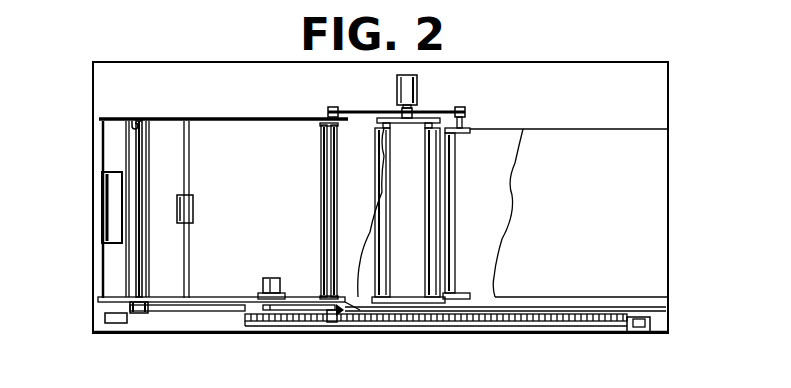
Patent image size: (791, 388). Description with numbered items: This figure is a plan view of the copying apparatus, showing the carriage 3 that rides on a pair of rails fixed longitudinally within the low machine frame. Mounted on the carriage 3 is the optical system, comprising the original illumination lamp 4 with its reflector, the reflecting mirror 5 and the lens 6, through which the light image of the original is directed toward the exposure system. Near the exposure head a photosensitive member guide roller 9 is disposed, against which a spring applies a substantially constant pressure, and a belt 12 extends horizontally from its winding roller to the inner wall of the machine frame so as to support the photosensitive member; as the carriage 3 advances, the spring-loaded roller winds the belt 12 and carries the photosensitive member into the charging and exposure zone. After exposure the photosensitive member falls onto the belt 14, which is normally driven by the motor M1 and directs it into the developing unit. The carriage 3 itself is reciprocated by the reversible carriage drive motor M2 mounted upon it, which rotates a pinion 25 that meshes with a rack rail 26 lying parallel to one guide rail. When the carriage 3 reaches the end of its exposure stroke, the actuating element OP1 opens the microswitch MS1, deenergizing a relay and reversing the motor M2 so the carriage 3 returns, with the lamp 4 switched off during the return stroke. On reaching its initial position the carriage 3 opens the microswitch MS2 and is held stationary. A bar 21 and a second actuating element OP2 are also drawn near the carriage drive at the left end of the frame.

The carriage 3 is at (259, 118).
The original illumination lamp 4 is at (132, 122).
The reflecting mirror 5 is at (112, 212).
The lens 6 is at (191, 202).
The photosensitive member guide roller 9 is at (330, 186).
The belt 12 is at (345, 146).
The belt 14 is at (500, 146).
The bar 21 is at (180, 312).
The pinion 25 is at (330, 323).
The rack rail 26 is at (511, 321).
The motor M1 is at (418, 88).
The carriage drive motor M2 is at (272, 278).
The microswitch MS1 is at (637, 328).
The microswitch MS2 is at (114, 323).
The actuating element OP1 is at (342, 314).
The optical sensor OP2 is at (129, 308).